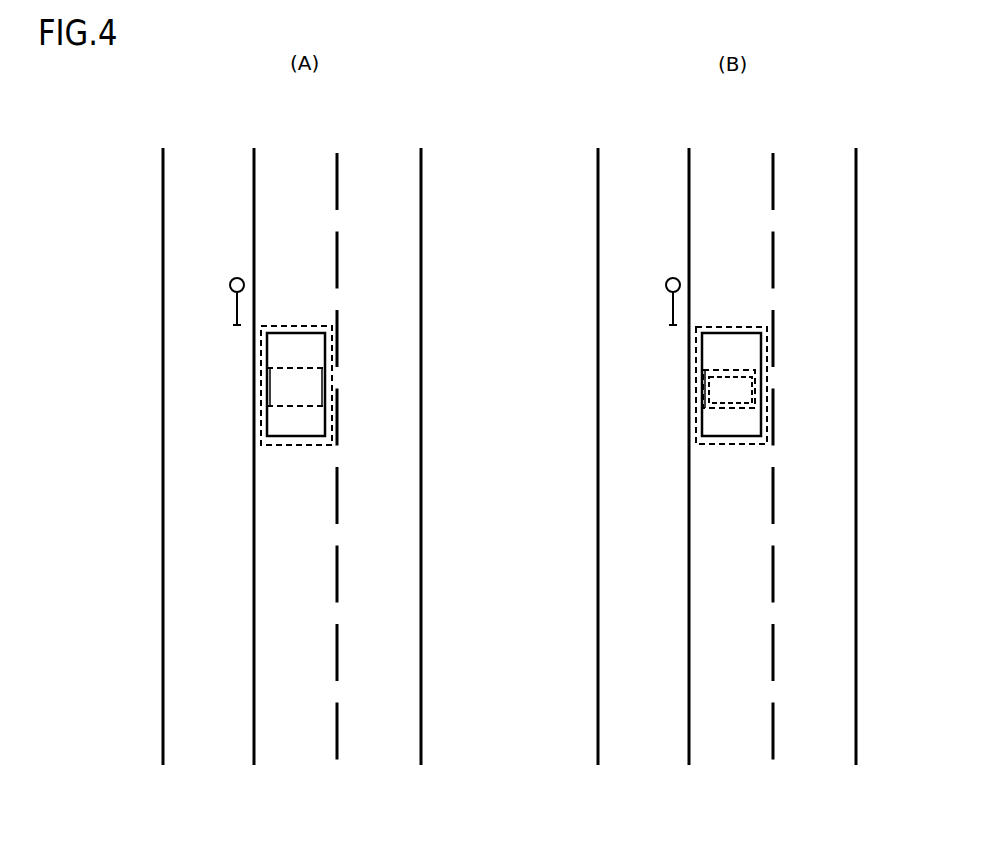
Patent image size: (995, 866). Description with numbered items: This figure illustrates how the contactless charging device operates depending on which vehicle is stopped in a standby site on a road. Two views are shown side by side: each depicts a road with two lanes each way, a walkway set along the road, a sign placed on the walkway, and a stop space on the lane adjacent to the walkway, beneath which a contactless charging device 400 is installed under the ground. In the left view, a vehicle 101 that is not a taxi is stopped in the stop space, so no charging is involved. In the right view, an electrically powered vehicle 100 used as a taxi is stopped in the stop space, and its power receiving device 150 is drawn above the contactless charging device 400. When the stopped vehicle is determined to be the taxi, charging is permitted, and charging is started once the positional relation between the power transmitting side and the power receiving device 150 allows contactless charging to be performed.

The vehicle 101 is at (312, 437).
The electrically powered vehicle 100 is at (769, 403).
The contactless charging device 400 is at (765, 369).
The power receiving device 150 is at (772, 410).